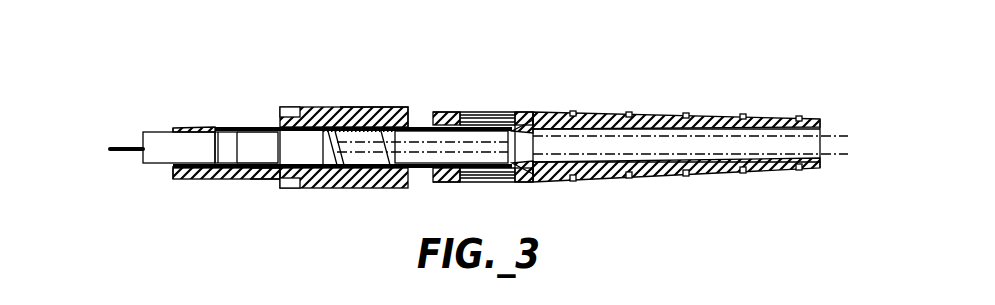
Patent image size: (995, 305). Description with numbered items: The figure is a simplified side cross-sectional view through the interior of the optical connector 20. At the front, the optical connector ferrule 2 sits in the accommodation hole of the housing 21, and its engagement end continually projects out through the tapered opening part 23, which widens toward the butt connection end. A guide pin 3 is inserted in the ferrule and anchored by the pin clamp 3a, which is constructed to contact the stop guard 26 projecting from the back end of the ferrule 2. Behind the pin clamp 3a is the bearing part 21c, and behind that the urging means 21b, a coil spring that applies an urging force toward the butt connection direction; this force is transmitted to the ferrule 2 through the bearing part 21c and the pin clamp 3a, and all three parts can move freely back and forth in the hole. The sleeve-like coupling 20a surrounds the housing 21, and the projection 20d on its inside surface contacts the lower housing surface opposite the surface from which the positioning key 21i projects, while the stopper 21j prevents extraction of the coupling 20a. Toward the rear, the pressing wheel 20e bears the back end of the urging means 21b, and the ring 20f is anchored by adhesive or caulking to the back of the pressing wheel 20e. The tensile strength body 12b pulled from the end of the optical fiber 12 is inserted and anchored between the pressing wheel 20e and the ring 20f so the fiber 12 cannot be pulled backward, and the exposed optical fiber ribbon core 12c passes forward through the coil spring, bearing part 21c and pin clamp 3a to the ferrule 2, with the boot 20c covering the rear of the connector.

The optical connector ferrule 2 is at (151, 133).
The guide pin 3 is at (116, 152).
The pin clamp 3a is at (260, 128).
The tapered opening part 23 is at (175, 168).
The stop guard 26 is at (224, 128).
The housing 21 is at (227, 182).
The positioning key 21i is at (262, 183).
The urging means 21b is at (352, 188).
The bearing part 21c is at (302, 110).
The stopper 21j is at (317, 112).
The coupling 20a is at (360, 108).
The projection 20d is at (377, 111).
The optical connector 20 is at (496, 108).
The boot 20c is at (622, 112).
The pressing wheel 20e is at (475, 180).
The ring 20f is at (517, 182).
The optical fiber 12 is at (842, 130).
The optical fiber ribbon core 12c is at (418, 152).
The tensile strength body 12b is at (537, 165).